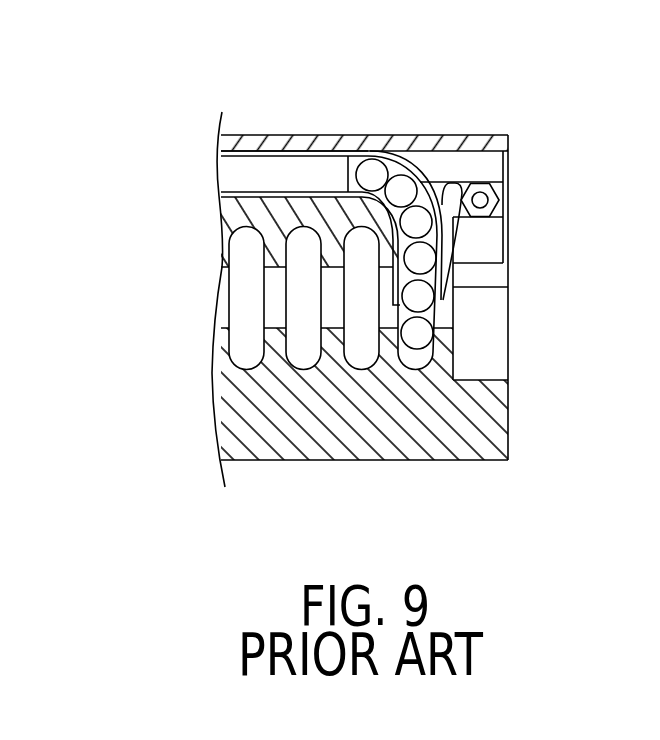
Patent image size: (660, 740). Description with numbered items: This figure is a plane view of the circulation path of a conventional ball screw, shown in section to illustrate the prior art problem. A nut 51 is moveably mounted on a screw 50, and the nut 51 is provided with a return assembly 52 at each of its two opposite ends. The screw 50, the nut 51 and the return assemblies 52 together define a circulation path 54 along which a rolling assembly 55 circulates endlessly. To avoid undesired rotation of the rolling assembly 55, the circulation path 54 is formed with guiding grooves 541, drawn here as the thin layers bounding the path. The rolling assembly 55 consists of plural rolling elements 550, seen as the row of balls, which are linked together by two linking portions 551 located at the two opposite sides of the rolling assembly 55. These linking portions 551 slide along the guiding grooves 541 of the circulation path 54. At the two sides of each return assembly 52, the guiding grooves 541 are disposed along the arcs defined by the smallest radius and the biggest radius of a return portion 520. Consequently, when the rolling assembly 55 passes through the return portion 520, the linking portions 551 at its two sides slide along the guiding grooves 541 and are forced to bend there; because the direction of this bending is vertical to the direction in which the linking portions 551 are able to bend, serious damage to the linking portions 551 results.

The screw 50 is at (340, 258).
The nut 51 is at (310, 143).
The return assembly 52 is at (482, 201).
The return portion 520 is at (377, 238).
The circulation path 54 is at (260, 177).
The guiding groove 541 is at (238, 155).
The rolling assembly 55 is at (439, 183).
The rolling element 550 is at (373, 172).
The linking portion 551 is at (388, 205).